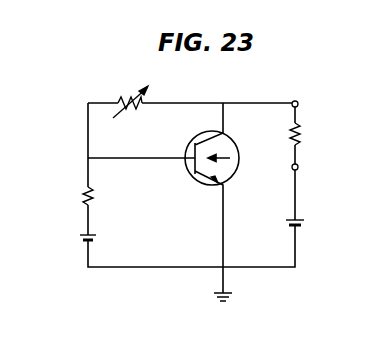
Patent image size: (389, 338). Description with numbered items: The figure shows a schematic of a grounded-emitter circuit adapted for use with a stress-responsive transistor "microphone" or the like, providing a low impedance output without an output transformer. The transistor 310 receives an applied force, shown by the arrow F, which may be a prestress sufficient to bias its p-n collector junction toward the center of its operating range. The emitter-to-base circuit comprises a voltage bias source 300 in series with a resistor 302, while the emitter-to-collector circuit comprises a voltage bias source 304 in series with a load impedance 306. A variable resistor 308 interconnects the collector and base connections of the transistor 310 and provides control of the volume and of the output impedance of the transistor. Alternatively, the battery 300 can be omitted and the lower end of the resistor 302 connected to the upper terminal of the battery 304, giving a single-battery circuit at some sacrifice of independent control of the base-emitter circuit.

The voltage bias source 300 is at (80, 237).
The resistor 302 is at (83, 190).
The voltage bias source 304 is at (304, 222).
The load impedance 306 is at (300, 130).
The variable resistor 308 is at (124, 98).
The transistor 310 is at (190, 172).